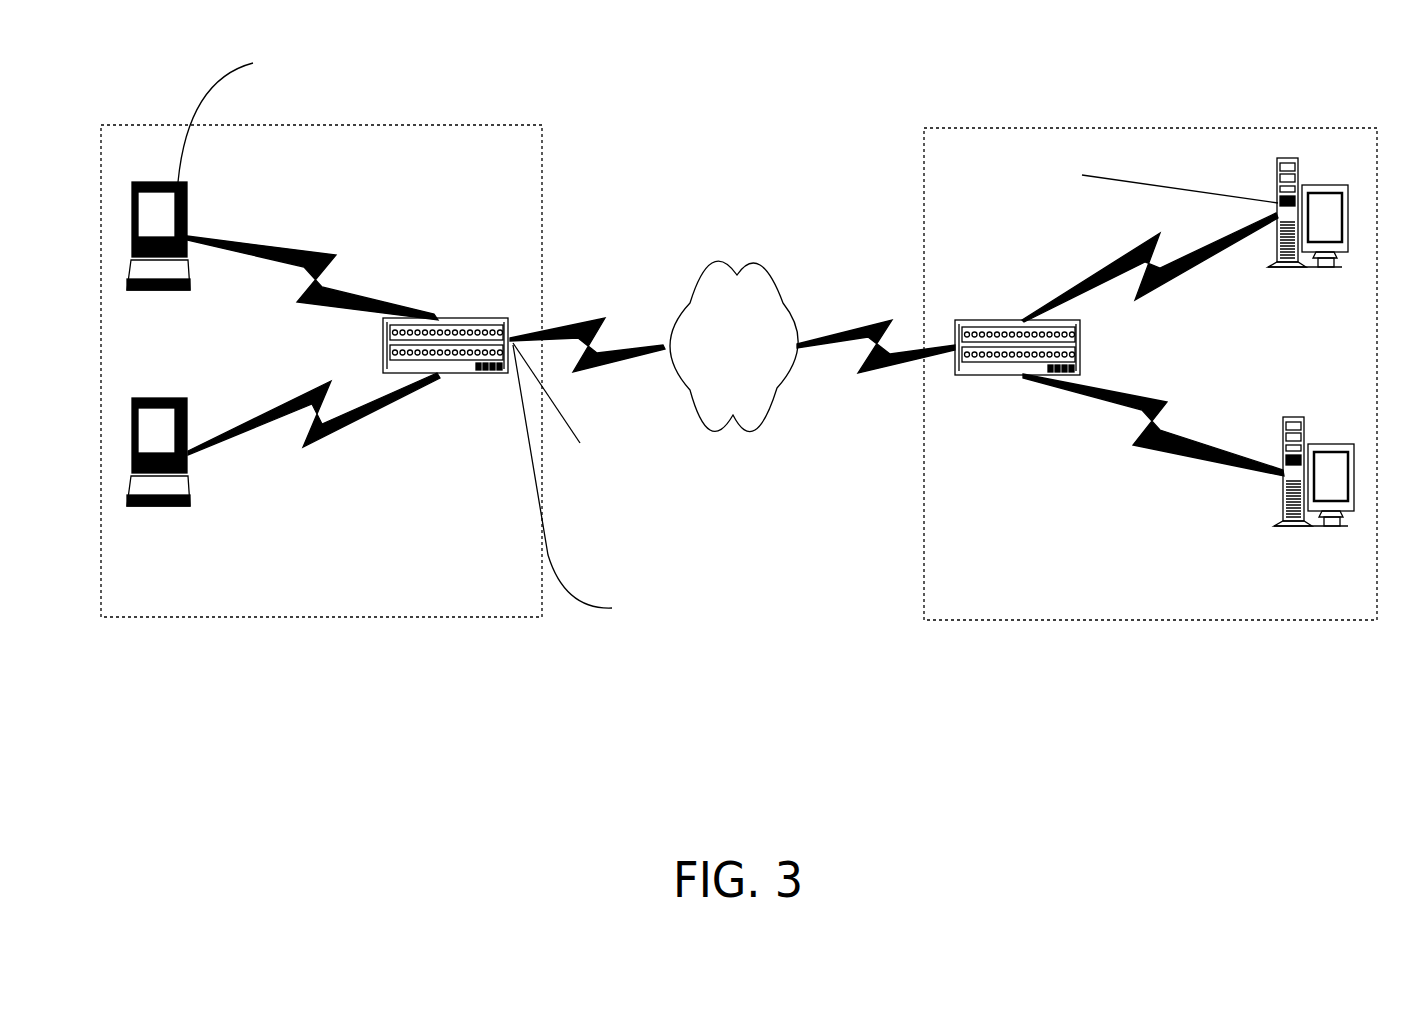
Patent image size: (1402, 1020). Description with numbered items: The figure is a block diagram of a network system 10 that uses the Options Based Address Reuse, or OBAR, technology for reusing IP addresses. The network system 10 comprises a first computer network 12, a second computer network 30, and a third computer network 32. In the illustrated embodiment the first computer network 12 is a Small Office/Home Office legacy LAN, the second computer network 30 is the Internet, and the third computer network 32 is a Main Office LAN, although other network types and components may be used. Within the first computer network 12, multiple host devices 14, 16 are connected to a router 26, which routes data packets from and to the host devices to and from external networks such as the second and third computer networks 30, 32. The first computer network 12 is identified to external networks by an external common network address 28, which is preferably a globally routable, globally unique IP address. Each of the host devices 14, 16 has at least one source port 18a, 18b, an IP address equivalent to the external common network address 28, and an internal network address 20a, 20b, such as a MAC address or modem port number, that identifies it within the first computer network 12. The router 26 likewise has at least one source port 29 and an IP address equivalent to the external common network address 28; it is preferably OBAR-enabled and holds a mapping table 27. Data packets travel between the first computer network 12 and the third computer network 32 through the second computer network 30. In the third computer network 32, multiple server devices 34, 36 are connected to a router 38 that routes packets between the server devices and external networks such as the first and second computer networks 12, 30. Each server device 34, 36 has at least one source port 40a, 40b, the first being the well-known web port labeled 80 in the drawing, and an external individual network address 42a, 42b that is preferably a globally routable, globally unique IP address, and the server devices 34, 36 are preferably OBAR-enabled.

The network system 10 is at (740, 95).
The first computer network 12 is at (305, 614).
The host device 14 is at (192, 207).
The host device 16 is at (196, 484).
The source port 18a is at (325, 63).
The source port 18b is at (178, 398).
The internal network address 20a is at (186, 225).
The internal network address 20b is at (188, 454).
The router 26 is at (447, 306).
The mapping table 27 is at (505, 317).
The external common network address 28 is at (642, 478).
The source port 29 is at (682, 607).
The second computer network 30 is at (762, 418).
The third computer network 32 is at (1143, 615).
The server device 34 is at (1266, 168).
The server device 36 is at (1276, 483).
The router 38 is at (1018, 318).
The source port 40a is at (1237, 131).
The source port 40b is at (1331, 446).
The external individual network address 42a is at (1010, 151).
The external individual network address 42b is at (1283, 455).
The Server 1 port number 80 is at (1326, 188).